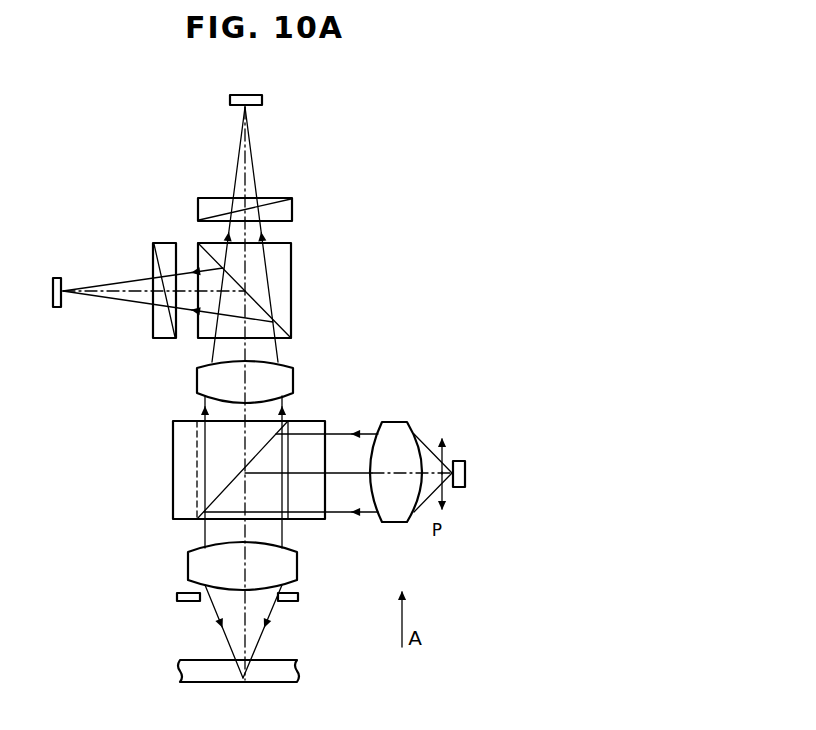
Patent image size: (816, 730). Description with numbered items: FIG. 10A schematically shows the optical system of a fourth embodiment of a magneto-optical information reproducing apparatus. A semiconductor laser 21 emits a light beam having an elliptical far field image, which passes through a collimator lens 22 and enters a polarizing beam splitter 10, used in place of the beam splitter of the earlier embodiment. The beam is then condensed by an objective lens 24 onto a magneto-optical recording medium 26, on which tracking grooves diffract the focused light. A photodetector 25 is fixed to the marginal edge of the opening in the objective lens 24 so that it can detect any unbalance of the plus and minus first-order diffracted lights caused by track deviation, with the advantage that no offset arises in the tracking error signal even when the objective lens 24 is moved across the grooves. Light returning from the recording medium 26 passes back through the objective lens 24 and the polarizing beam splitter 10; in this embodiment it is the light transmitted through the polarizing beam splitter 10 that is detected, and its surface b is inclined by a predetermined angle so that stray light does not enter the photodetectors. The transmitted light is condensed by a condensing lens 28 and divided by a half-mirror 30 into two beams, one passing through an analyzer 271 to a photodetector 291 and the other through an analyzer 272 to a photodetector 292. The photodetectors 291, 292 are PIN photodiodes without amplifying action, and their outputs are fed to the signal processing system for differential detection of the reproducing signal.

The photodetector 291 is at (262, 100).
The analyzer 271 is at (292, 200).
The half-mirror 30 is at (291, 246).
The analyzer 272 is at (165, 243).
The photodetector 292 is at (58, 277).
The condensing lens 28 is at (288, 380).
The polarizing beam splitter 10 is at (325, 422).
The collimator lens 22 is at (405, 428).
The semiconductor laser 21 is at (465, 468).
The objective lens 24 is at (190, 562).
The photodetector 25 is at (188, 603).
The magneto-optical recording medium 26 is at (180, 673).